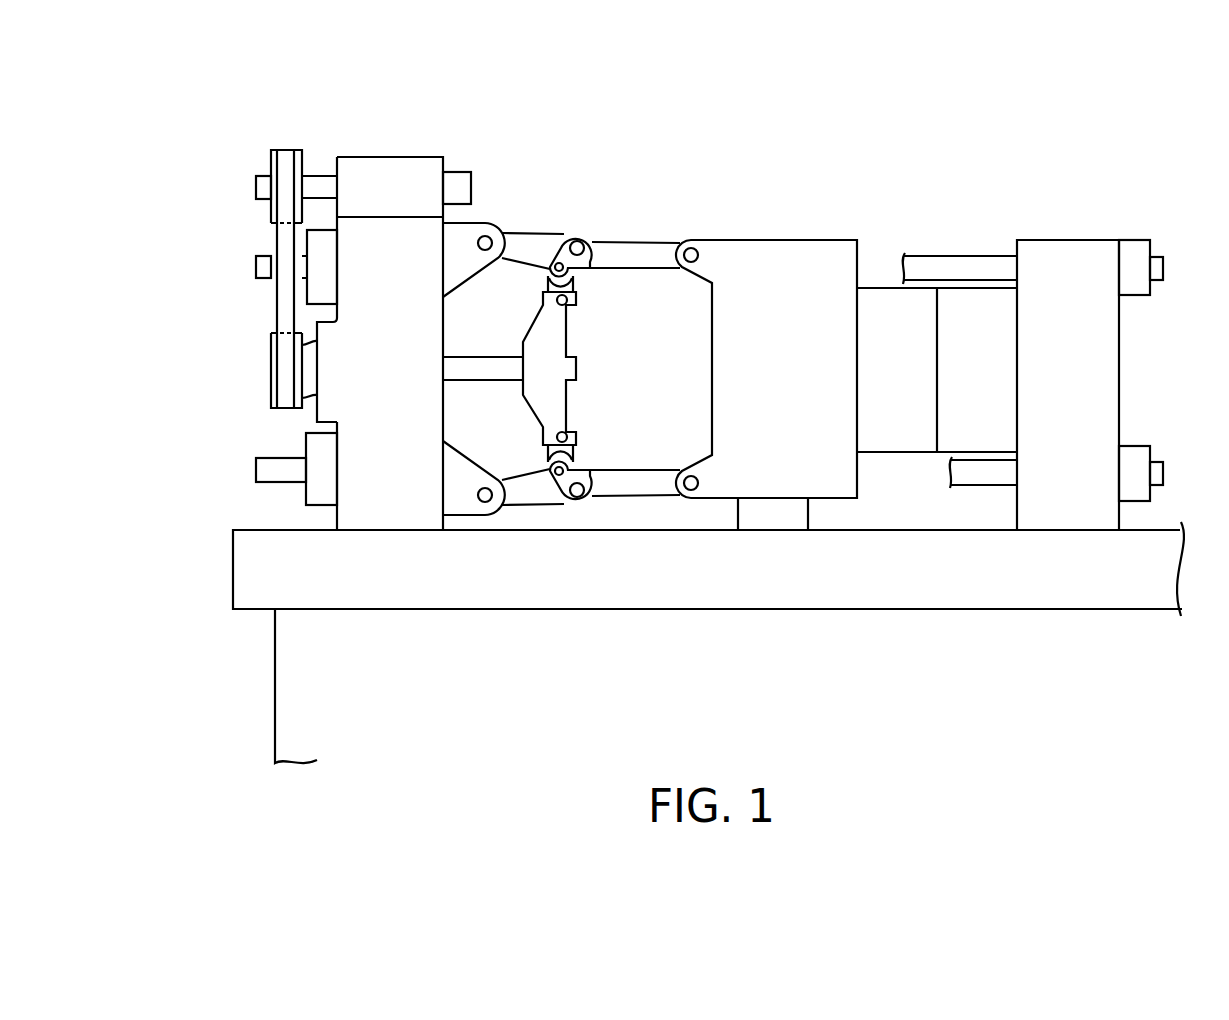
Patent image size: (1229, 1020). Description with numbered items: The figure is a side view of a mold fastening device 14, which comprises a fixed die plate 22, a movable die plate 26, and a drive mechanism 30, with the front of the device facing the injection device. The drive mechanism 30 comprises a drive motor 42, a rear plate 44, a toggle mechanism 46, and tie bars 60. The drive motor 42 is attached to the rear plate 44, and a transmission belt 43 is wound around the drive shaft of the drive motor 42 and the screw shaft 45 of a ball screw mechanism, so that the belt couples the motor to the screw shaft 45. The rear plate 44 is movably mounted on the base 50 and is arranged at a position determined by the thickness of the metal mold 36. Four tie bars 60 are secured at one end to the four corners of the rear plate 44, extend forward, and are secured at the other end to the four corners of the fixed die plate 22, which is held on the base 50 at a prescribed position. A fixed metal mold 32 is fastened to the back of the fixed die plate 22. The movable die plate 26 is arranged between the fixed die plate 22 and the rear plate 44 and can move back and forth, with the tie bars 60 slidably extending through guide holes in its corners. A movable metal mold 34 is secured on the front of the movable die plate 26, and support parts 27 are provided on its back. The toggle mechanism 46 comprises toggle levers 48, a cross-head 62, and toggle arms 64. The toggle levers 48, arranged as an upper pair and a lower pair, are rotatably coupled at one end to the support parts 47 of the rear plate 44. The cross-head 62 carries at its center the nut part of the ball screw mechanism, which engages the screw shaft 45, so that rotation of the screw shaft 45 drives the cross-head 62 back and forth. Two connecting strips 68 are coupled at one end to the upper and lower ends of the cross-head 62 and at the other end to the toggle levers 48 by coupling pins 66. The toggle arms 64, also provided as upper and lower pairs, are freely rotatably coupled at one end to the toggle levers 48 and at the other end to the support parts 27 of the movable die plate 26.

The mold fastening device 14 is at (941, 97).
The fixed die plate 22 is at (1085, 250).
The movable die plate 26 is at (792, 250).
The support parts 27 is at (707, 245).
The drive mechanism 30 is at (219, 218).
The fixed metal mold 32 is at (983, 300).
The movable metal mold 34 is at (923, 300).
The metal mold 36 is at (1005, 206).
The drive motor 42 is at (390, 172).
The transmission belt 43 is at (286, 307).
The rear plate 44 is at (353, 426).
The screw shaft 45 is at (483, 372).
The toggle mechanism 46 is at (623, 203).
The support parts 47 is at (467, 237).
The toggle levers 48 is at (533, 243).
The base 50 is at (288, 685).
The tie bars 60 is at (923, 267).
The cross-head 62 is at (553, 333).
The toggle arms 64 is at (653, 247).
The coupling pins 66 is at (576, 232).
The connecting strips 68 is at (574, 290).